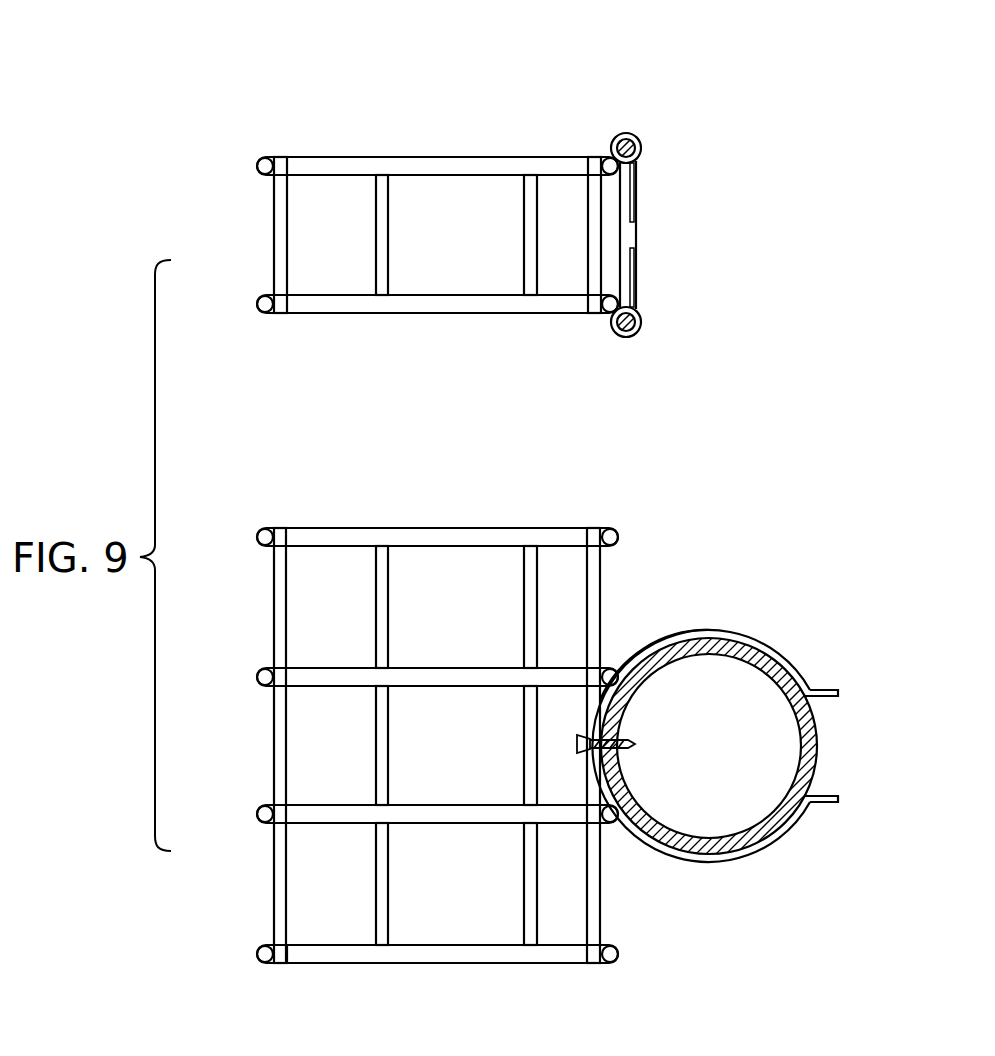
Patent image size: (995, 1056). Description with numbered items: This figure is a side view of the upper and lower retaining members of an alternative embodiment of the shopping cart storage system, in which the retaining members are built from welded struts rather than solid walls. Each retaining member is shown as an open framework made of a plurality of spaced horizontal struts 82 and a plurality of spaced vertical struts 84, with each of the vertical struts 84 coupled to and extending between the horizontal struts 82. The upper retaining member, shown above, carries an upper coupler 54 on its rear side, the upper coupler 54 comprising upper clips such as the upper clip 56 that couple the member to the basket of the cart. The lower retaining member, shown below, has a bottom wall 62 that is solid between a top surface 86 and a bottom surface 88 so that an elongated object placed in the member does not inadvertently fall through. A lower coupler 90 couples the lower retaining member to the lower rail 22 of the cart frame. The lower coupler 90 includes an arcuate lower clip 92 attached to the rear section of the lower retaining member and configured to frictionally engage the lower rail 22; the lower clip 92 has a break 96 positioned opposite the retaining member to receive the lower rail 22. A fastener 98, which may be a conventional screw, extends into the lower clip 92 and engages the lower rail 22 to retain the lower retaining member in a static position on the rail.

The lower rail 22 is at (663, 827).
The upper coupler 54 is at (664, 147).
The upper clip 56 is at (625, 139).
The bottom wall 62 is at (347, 953).
The horizontal struts 82 is at (262, 175).
The vertical struts 84 is at (590, 205).
The top surface 86 is at (300, 950).
The bottom surface 88 is at (307, 963).
The lower coupler 90 is at (761, 614).
The lower clip 92 is at (693, 640).
The break 96 is at (834, 746).
The fastener 98 is at (580, 750).